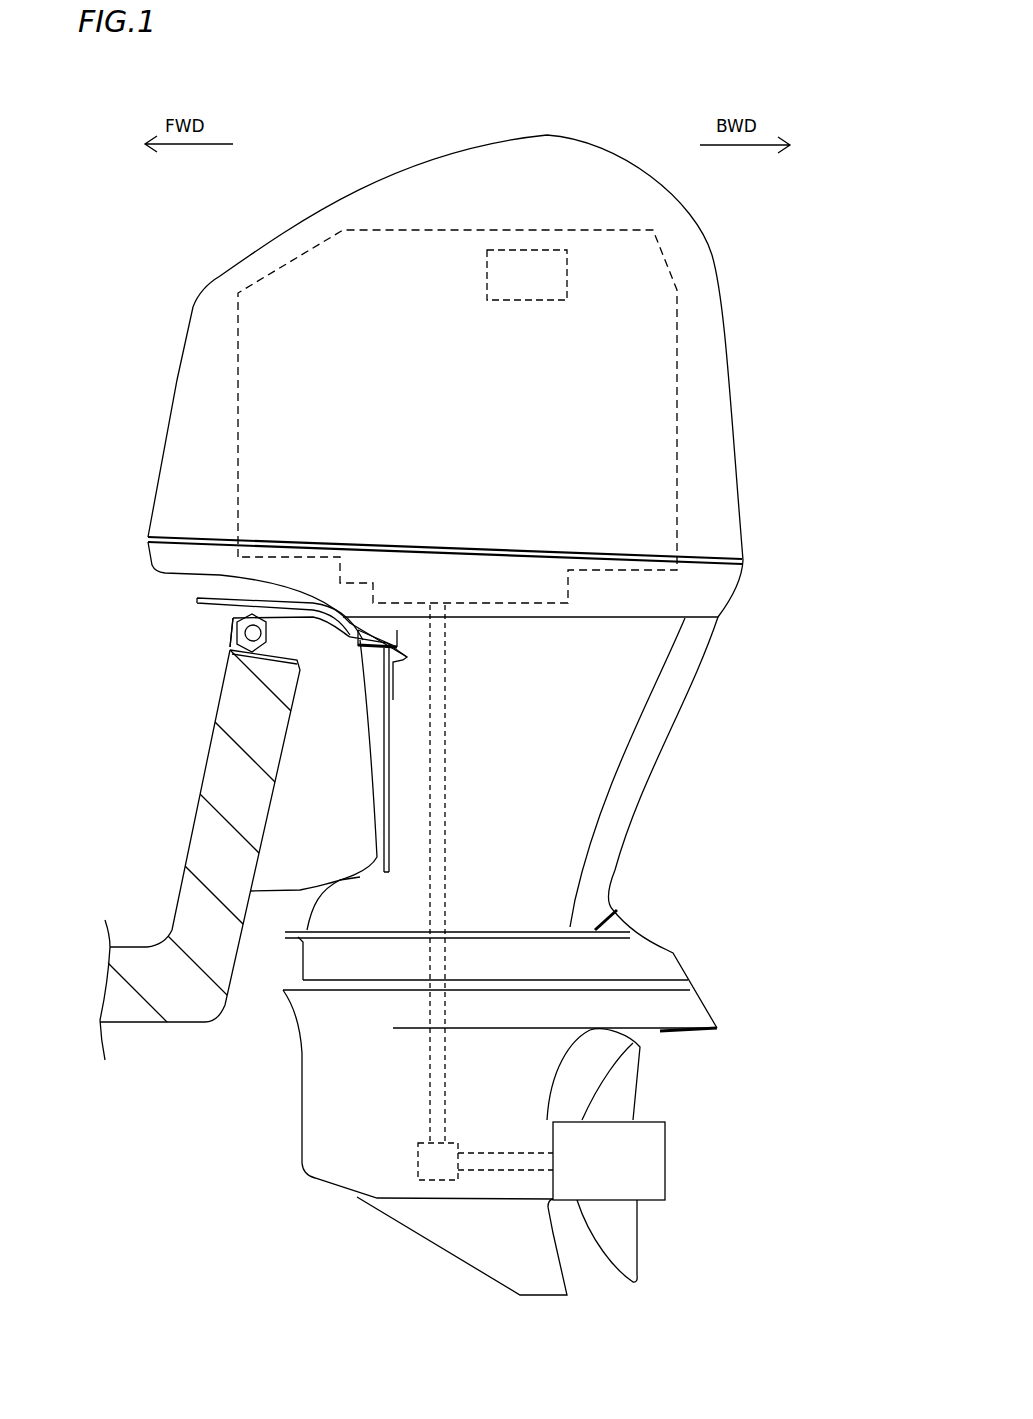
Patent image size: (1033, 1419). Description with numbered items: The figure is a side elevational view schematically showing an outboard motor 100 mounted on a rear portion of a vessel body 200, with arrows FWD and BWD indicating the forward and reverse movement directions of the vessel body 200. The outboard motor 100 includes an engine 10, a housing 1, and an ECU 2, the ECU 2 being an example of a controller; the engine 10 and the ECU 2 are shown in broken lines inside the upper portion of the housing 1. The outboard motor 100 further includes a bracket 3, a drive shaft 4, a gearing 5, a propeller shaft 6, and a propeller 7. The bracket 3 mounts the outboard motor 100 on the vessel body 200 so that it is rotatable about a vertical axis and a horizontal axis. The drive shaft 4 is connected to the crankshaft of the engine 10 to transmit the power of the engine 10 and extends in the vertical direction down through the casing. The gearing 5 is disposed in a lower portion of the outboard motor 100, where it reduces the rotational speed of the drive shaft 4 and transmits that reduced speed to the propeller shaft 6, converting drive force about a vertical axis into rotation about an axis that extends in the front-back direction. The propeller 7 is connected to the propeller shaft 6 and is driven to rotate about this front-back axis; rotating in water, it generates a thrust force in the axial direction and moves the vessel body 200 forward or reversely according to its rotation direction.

The outboard motor 100 is at (597, 82).
The housing 1 is at (727, 318).
The engine 10 is at (680, 370).
The ECU 2 is at (547, 250).
The vessel body 200 is at (220, 690).
The bracket 3 is at (310, 755).
The drive shaft 4 is at (440, 833).
The gearing 5 is at (413, 1172).
The propeller shaft 6 is at (477, 1183).
The propeller 7 is at (630, 1100).